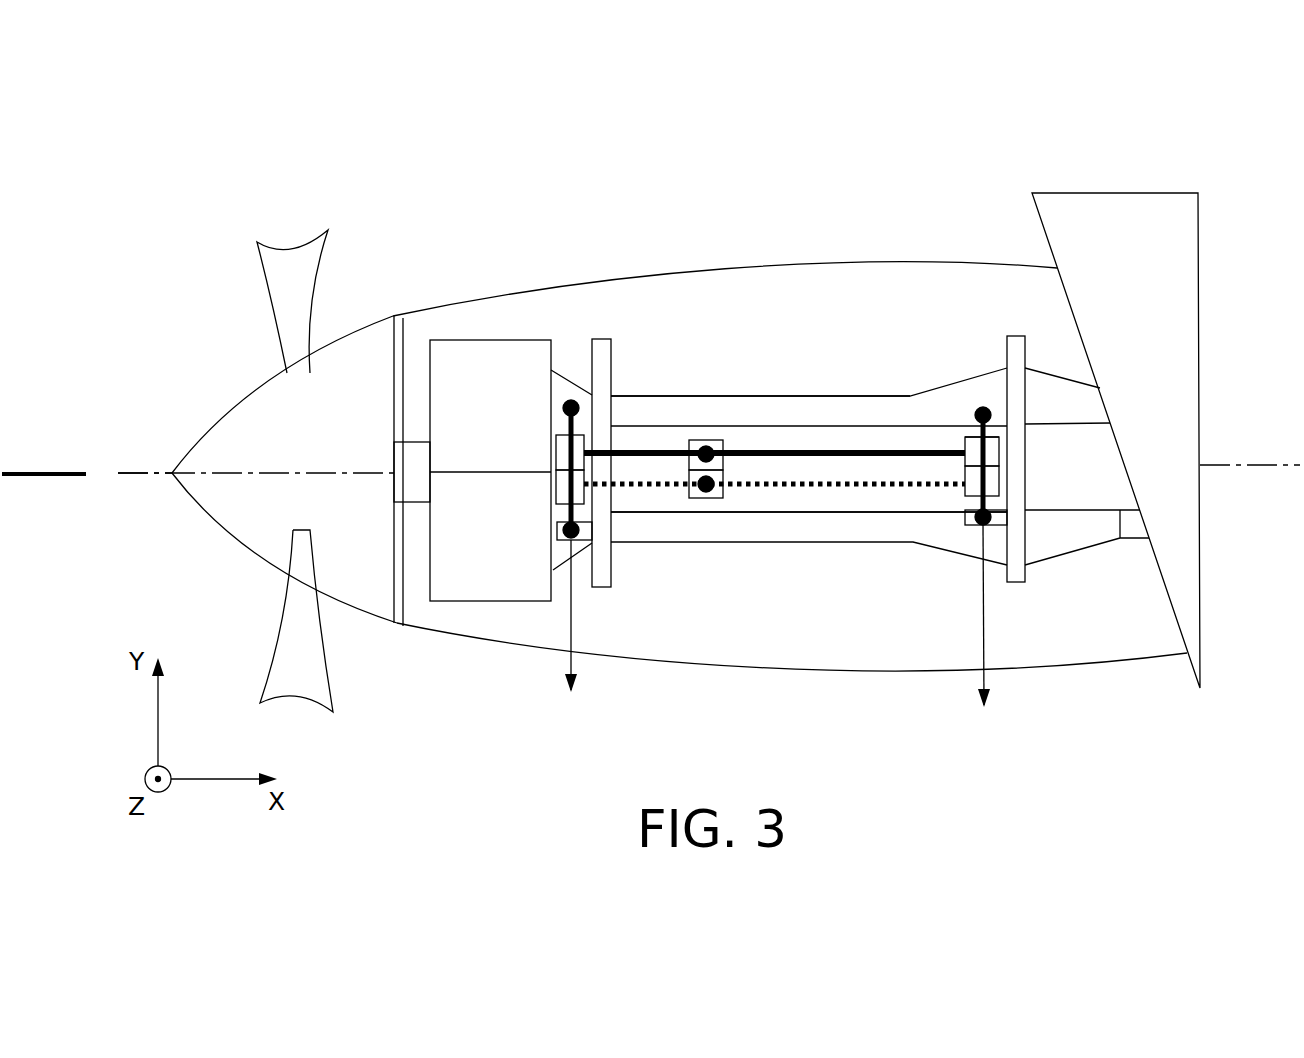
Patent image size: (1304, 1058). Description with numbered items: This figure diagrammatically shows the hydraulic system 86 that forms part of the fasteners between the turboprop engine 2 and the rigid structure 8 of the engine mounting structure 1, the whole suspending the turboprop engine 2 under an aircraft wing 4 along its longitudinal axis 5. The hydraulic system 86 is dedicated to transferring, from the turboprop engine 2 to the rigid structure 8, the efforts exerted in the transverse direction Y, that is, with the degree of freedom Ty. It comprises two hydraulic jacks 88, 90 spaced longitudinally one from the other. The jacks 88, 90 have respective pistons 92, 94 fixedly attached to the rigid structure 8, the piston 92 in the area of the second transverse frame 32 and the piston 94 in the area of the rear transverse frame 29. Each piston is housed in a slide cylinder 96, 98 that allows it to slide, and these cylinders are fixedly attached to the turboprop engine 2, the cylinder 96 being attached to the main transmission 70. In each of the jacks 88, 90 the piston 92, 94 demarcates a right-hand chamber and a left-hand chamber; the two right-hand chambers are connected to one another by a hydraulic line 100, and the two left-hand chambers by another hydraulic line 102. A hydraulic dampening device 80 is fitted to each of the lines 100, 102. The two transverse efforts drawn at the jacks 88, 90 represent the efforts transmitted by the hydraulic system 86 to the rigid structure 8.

The engine mounting structure 1 is at (952, 514).
The turboprop engine 2 is at (868, 387).
The wing 4 is at (1198, 223).
The longitudinal axis 5 is at (134, 472).
The rigid structure 8 is at (930, 437).
The rear transverse frame 29 is at (1017, 583).
The second transverse frame 32 is at (605, 587).
The main transmission 70 is at (452, 367).
The hydraulic dampening device 80 is at (706, 440).
The hydraulic system 86 is at (770, 437).
The hydraulic jack 88 is at (545, 457).
The hydraulic jack 90 is at (1012, 467).
The piston 92 is at (556, 486).
The piston 94 is at (1000, 490).
The slide cylinder 96 is at (556, 442).
The slide cylinder 98 is at (1000, 450).
The hydraulic line 100 is at (585, 228).
The hydraulic line 102 is at (866, 490).